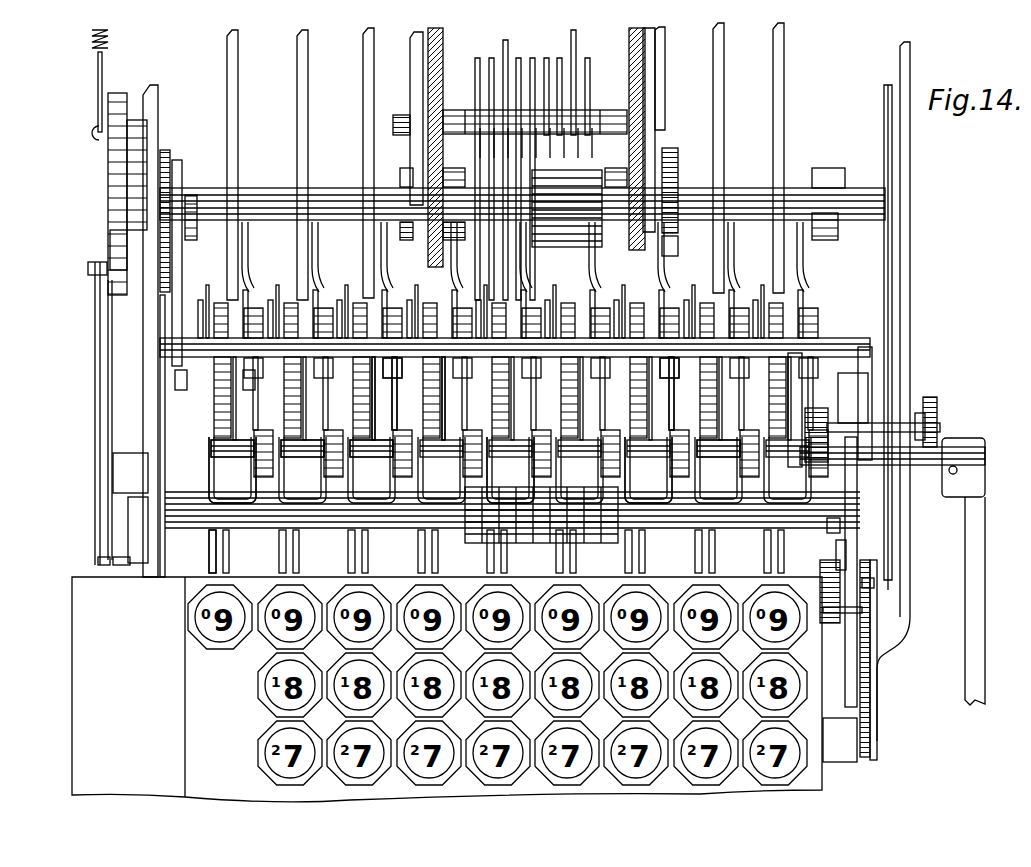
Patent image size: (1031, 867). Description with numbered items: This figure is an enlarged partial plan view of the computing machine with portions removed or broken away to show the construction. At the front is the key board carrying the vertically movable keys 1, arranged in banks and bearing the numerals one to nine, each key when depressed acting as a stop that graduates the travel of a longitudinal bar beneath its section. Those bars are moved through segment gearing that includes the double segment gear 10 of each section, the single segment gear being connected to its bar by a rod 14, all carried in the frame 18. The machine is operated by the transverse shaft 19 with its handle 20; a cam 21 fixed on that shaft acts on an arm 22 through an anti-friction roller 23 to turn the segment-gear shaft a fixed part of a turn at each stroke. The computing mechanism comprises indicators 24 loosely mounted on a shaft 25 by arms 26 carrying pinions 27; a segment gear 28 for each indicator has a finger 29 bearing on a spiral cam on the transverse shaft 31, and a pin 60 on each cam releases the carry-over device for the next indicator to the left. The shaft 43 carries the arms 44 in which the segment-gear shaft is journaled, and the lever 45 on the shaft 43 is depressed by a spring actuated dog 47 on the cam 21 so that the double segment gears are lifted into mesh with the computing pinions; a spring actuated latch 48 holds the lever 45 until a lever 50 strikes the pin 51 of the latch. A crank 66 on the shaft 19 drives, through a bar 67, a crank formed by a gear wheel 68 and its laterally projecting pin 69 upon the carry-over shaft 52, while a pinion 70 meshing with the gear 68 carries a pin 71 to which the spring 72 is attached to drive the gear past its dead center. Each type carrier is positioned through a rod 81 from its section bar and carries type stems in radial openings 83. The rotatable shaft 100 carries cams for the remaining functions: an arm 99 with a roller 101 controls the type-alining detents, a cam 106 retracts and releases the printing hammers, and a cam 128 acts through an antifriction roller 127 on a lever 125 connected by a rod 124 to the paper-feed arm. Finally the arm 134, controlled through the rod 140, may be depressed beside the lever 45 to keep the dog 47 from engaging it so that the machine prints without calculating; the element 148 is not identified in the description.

The keys 1 is at (258, 687).
The double segment gear 10 is at (407, 398).
The rod 14 is at (280, 565).
The frame 18 is at (160, 125).
The shaft 19 is at (930, 490).
The handle 20 is at (968, 543).
The cam 21 is at (835, 537).
The arm 22 is at (860, 368).
The anti-friction roller 23 is at (845, 445).
The indicator 24 is at (486, 534).
The shaft 25 is at (322, 462).
The arm 26 is at (535, 487).
The pinion 27 is at (250, 462).
The segment gear 28 is at (397, 408).
The finger 29 is at (398, 366).
The shaft 31 is at (830, 297).
The shaft 43 is at (820, 500).
The arm 44 is at (165, 408).
The lever 45 is at (868, 538).
The spring actuated dog 47 is at (874, 582).
The spring actuated latch 48 is at (862, 668).
The lever 50 is at (830, 585).
The pin 51 is at (848, 615).
The shaft 52 is at (796, 192).
The pin 60 is at (175, 378).
The crank 66 is at (118, 525).
The bar 67 is at (97, 340).
The gear wheel 68 is at (110, 242).
The pin 69 is at (88, 270).
The pinion 70 is at (118, 97).
The pin 71 is at (95, 130).
The spring 72 is at (114, 44).
The rod 81 is at (238, 102).
The radial opening 83 is at (480, 297).
The arm 99 is at (412, 150).
The shaft 100 is at (265, 205).
The roller 101 is at (402, 175).
The cam 106 is at (407, 242).
The rod 124 is at (665, 88).
The lever 125 is at (665, 143).
The antifriction roller 127 is at (675, 160).
The cam 128 is at (678, 228).
The arm 134 is at (878, 668).
The rod 140 is at (905, 228).
The bar 148 is at (412, 82).